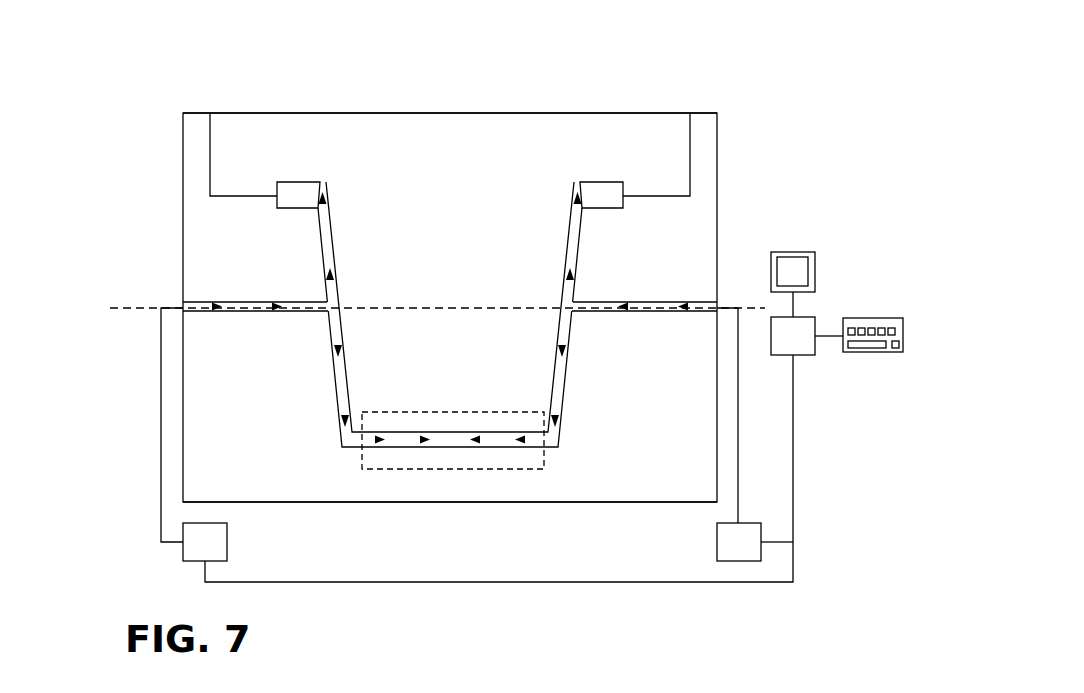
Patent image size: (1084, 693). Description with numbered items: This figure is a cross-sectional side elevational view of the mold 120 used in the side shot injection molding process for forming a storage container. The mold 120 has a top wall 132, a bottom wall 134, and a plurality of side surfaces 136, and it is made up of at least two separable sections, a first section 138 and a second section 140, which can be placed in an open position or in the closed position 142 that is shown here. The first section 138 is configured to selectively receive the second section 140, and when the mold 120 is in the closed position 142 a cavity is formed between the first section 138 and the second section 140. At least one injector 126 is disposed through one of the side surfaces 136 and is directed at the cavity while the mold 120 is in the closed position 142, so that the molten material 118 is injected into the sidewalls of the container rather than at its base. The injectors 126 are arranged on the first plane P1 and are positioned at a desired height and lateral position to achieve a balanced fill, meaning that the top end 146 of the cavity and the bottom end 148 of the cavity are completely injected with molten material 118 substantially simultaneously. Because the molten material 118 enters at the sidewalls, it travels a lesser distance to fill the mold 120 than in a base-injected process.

The mold 120 is at (263, 113).
The top wall 132 is at (457, 113).
The first section 138 is at (627, 113).
The second section 140 is at (702, 113).
The top end of the cavity 146 is at (296, 182).
The closed position 142 is at (130, 113).
The injector 126 is at (243, 302).
The first plane P1 is at (130, 306).
The molten material 118 is at (337, 392).
The side surface 136 is at (183, 457).
The bottom end of the cavity 148 is at (471, 450).
The bottom wall 134 is at (562, 504).